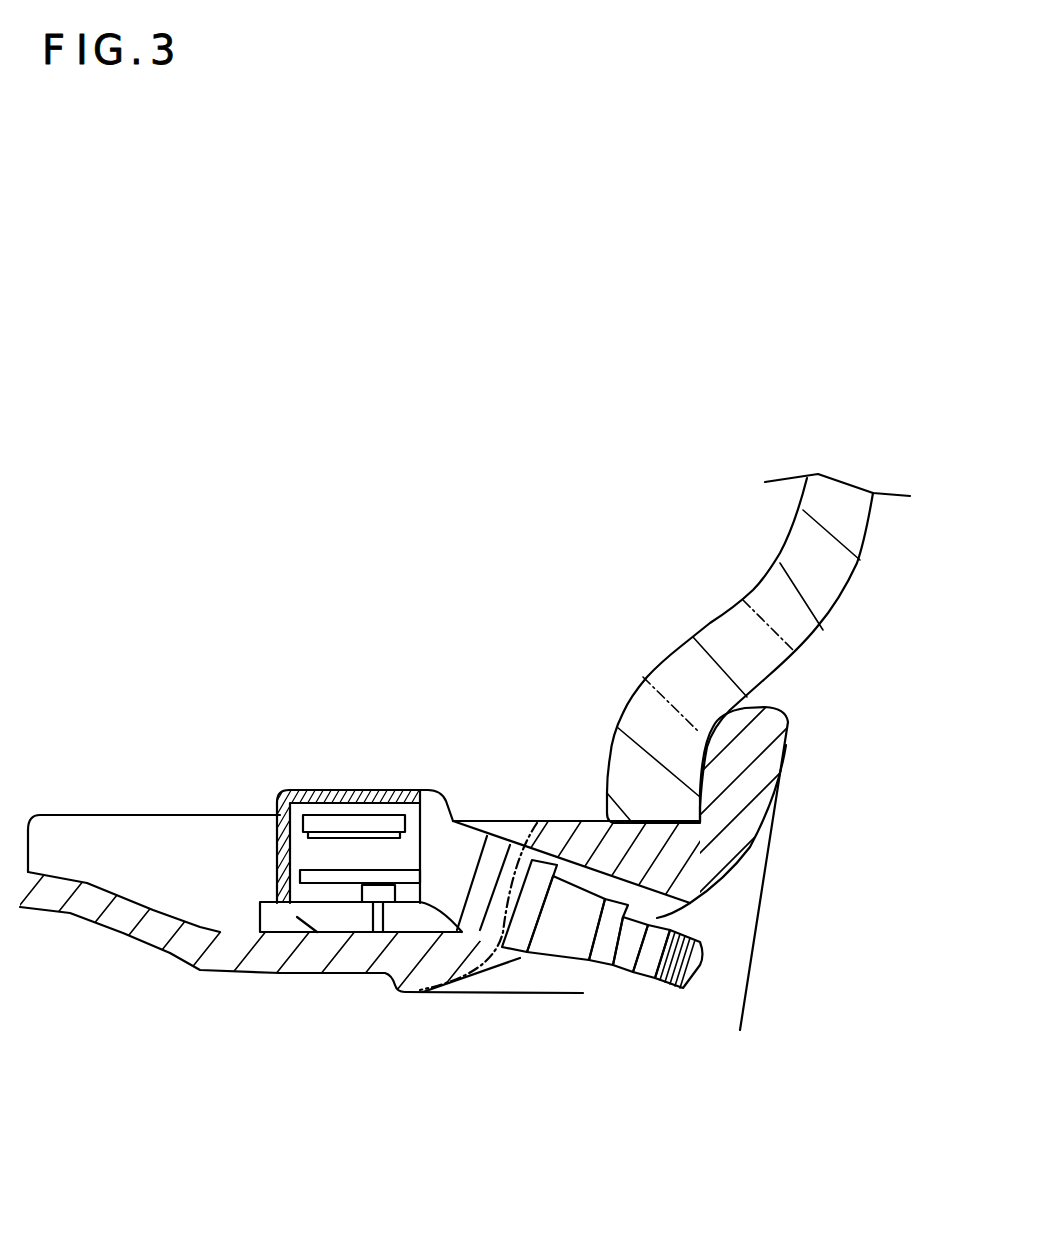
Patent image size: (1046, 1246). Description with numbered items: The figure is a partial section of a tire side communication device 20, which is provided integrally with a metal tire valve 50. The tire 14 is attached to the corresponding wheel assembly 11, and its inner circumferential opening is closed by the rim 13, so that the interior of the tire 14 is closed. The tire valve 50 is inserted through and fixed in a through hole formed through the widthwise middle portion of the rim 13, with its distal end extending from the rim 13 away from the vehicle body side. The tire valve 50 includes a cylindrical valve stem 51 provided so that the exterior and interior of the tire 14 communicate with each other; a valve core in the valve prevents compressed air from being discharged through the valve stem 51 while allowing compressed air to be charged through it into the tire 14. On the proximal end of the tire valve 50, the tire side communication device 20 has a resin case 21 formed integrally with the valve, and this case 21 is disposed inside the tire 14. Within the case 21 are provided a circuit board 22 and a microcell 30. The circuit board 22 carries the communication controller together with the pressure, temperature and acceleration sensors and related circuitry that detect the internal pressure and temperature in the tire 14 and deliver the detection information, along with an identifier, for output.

The wheel assembly 11 is at (810, 795).
The rim 13 is at (150, 927).
The tire 14 is at (795, 627).
The tire side communication device 20 is at (343, 805).
The case 21 is at (333, 797).
The circuit board 22 is at (312, 878).
The microcell 30 is at (318, 823).
The tire valve 50 is at (593, 966).
The valve stem 51 is at (553, 930).